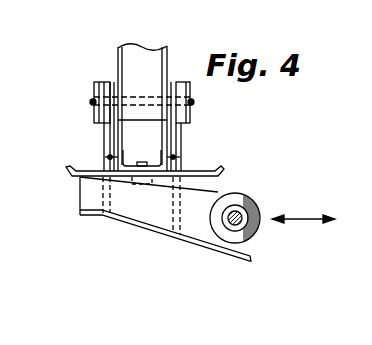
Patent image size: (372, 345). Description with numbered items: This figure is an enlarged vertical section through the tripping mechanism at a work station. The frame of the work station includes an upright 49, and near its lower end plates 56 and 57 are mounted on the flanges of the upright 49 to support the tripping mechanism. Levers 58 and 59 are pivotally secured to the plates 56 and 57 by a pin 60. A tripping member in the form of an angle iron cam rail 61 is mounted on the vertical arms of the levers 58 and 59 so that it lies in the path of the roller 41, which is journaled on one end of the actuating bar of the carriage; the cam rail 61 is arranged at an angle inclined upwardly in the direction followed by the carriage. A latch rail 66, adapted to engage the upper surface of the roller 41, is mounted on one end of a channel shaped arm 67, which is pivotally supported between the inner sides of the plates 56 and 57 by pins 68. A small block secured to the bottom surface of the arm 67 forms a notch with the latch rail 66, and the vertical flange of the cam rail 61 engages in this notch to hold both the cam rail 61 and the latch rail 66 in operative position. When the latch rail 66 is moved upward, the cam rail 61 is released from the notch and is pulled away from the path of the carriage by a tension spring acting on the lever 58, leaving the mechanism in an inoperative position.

The upright 49 is at (152, 52).
The pin 60 is at (93, 102).
The plate 57 is at (110, 130).
The lever 59 is at (105, 148).
The plate 56 is at (183, 131).
The lever 58 is at (183, 144).
The pins 68 is at (163, 154).
The latch rail 66 is at (93, 173).
The channel shaped arm 67 is at (133, 171).
The cam rail 61 is at (198, 230).
The roller 41 is at (260, 205).